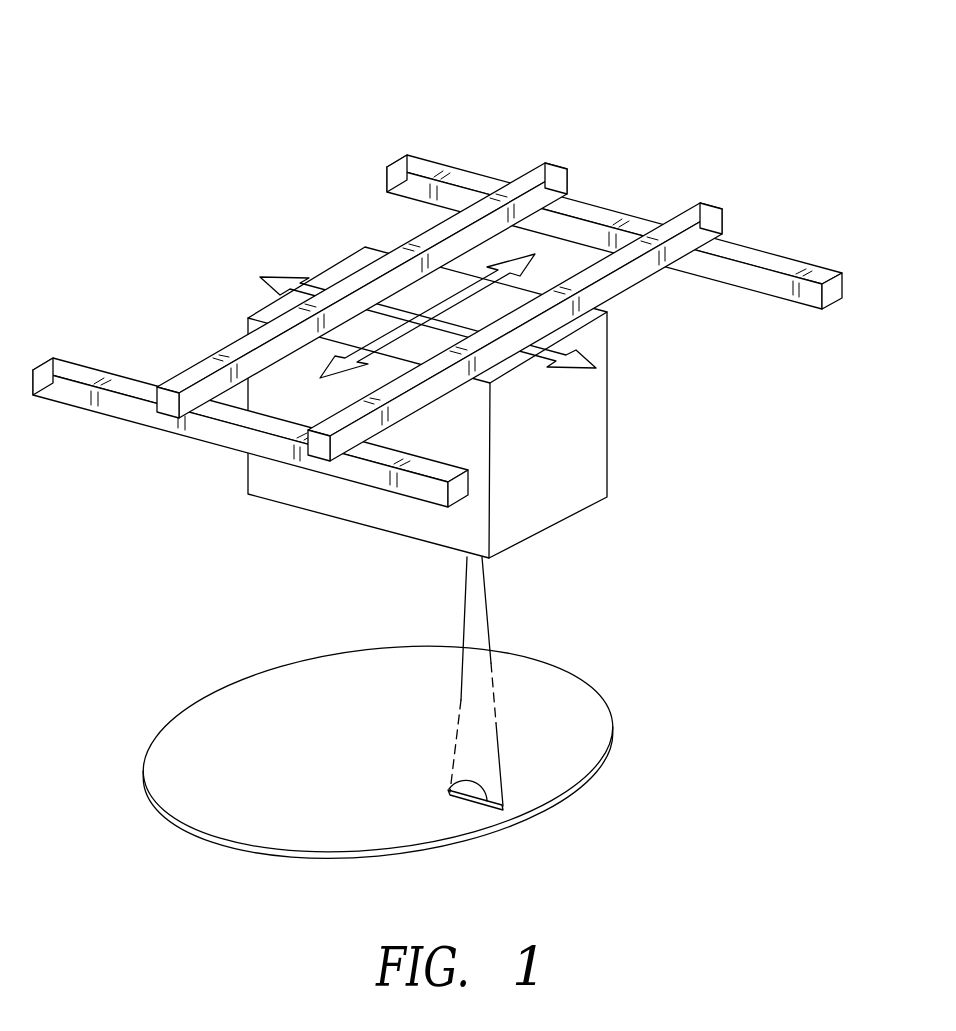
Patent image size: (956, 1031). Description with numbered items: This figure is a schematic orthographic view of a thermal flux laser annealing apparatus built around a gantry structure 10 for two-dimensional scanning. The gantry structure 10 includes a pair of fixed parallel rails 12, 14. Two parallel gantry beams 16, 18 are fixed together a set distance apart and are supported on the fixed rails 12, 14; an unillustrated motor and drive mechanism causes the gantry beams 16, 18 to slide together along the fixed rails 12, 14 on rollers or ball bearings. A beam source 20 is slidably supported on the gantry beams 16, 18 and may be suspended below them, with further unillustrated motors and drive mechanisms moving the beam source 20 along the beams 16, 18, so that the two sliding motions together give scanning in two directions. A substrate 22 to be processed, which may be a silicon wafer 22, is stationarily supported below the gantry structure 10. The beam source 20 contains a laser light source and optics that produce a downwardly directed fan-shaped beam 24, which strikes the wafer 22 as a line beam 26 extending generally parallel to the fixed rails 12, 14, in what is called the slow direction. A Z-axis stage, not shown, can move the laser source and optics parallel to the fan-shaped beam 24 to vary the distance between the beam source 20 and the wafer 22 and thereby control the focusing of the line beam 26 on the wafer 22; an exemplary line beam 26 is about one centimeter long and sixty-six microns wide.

The gantry structure 10 is at (207, 217).
The fixed parallel rail 12 is at (430, 160).
The fixed parallel rail 14 is at (68, 368).
The gantry beam 16 is at (558, 162).
The gantry beam 18 is at (710, 203).
The beam source 20 is at (573, 492).
The substrate 22 is at (202, 725).
The fan-shaped beam 24 is at (508, 740).
The line beam 26 is at (455, 773).